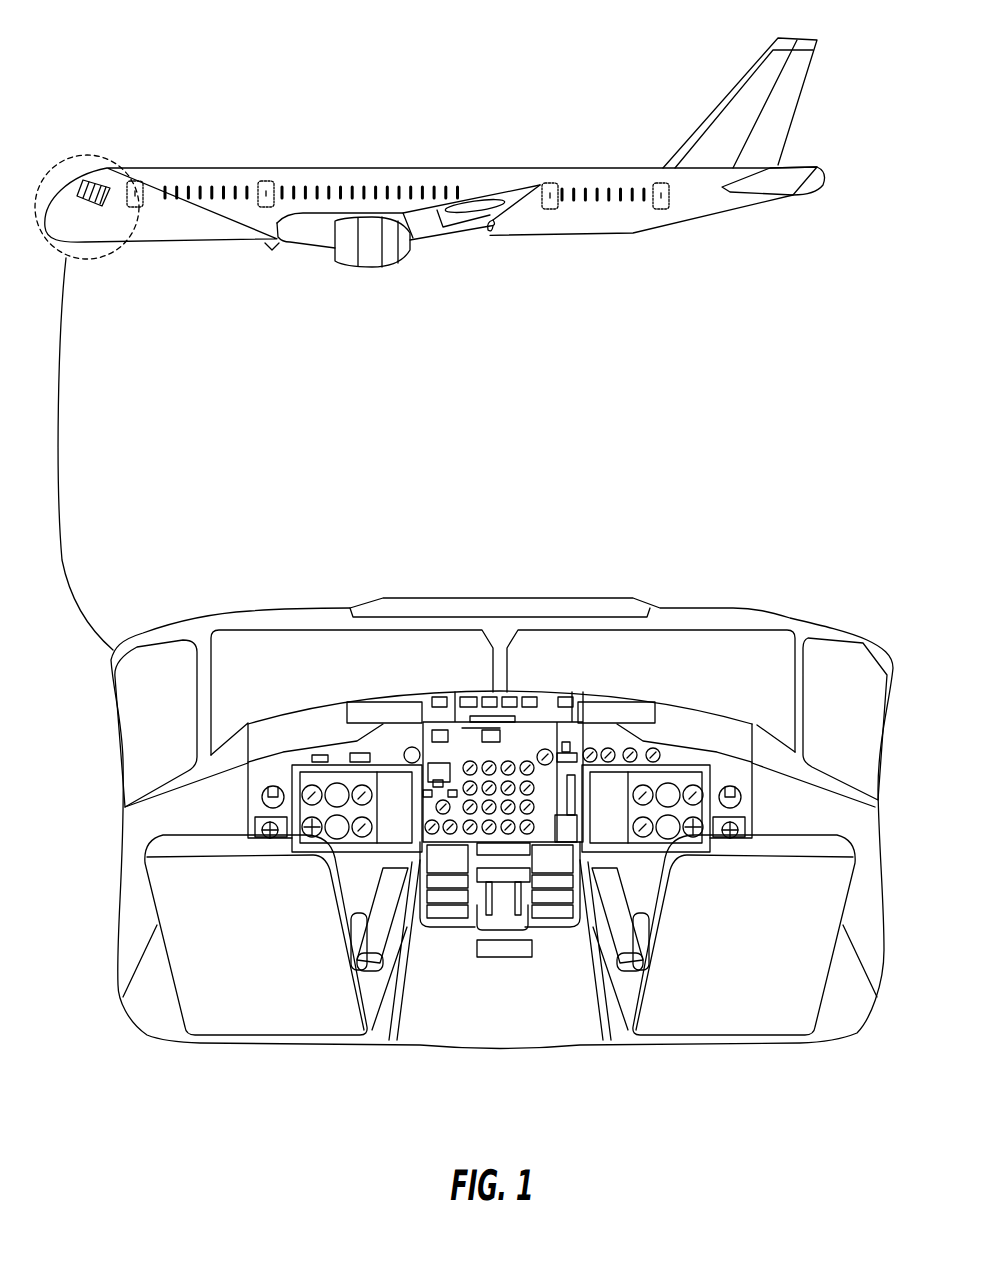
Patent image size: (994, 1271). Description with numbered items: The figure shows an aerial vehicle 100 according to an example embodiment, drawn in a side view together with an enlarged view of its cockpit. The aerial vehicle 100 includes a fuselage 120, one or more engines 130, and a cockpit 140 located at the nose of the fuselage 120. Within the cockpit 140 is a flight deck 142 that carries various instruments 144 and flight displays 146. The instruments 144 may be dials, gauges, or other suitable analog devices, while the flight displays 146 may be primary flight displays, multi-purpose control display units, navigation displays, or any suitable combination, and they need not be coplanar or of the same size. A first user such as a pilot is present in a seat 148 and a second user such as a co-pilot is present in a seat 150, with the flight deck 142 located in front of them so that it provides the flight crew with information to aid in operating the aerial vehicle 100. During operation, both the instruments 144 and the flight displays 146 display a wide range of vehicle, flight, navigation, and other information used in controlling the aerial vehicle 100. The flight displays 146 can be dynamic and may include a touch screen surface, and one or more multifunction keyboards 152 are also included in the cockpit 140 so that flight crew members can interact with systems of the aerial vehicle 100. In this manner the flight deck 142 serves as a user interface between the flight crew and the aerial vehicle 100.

The aerial vehicle 100 is at (507, 138).
The fuselage 120 is at (220, 228).
The engine 130 is at (367, 258).
The cockpit 140 is at (138, 228).
The flight deck 142 is at (730, 752).
The instruments 144 is at (541, 746).
The flight displays 146 is at (393, 795).
The seat 148 is at (188, 972).
The seat 150 is at (813, 1000).
The multifunction keyboards 152 is at (453, 915).